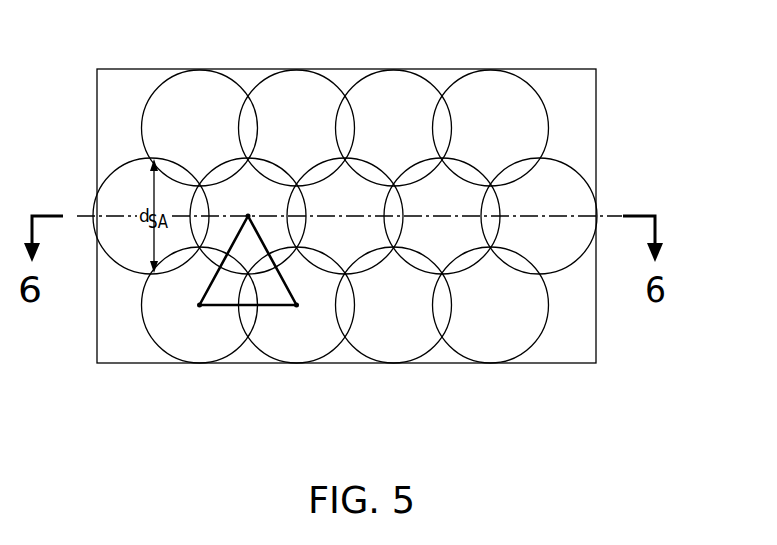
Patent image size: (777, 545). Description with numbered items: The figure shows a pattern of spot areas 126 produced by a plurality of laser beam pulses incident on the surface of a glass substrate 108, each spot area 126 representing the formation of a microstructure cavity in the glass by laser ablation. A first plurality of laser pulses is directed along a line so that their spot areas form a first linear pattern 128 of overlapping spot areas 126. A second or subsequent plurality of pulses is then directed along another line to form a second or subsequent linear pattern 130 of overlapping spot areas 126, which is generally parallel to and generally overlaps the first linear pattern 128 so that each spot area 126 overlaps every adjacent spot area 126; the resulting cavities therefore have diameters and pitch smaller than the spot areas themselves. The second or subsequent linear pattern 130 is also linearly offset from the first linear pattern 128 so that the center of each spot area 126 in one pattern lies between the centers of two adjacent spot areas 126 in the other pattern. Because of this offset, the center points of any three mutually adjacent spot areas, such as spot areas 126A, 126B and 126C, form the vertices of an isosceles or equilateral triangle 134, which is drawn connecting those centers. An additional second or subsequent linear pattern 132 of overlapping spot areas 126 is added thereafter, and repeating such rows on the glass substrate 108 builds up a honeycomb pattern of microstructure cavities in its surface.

The glass substrate 108 is at (97, 113).
The spot area 126 is at (203, 70).
The spot area 126A is at (203, 364).
The spot area 126B is at (298, 364).
The spot area 126C is at (243, 187).
The first linear pattern 128 is at (616, 202).
The second or subsequent linear pattern 130 is at (567, 320).
The additional second or subsequent linear pattern 132 is at (566, 108).
The isosceles or equilateral triangle 134 is at (218, 308).